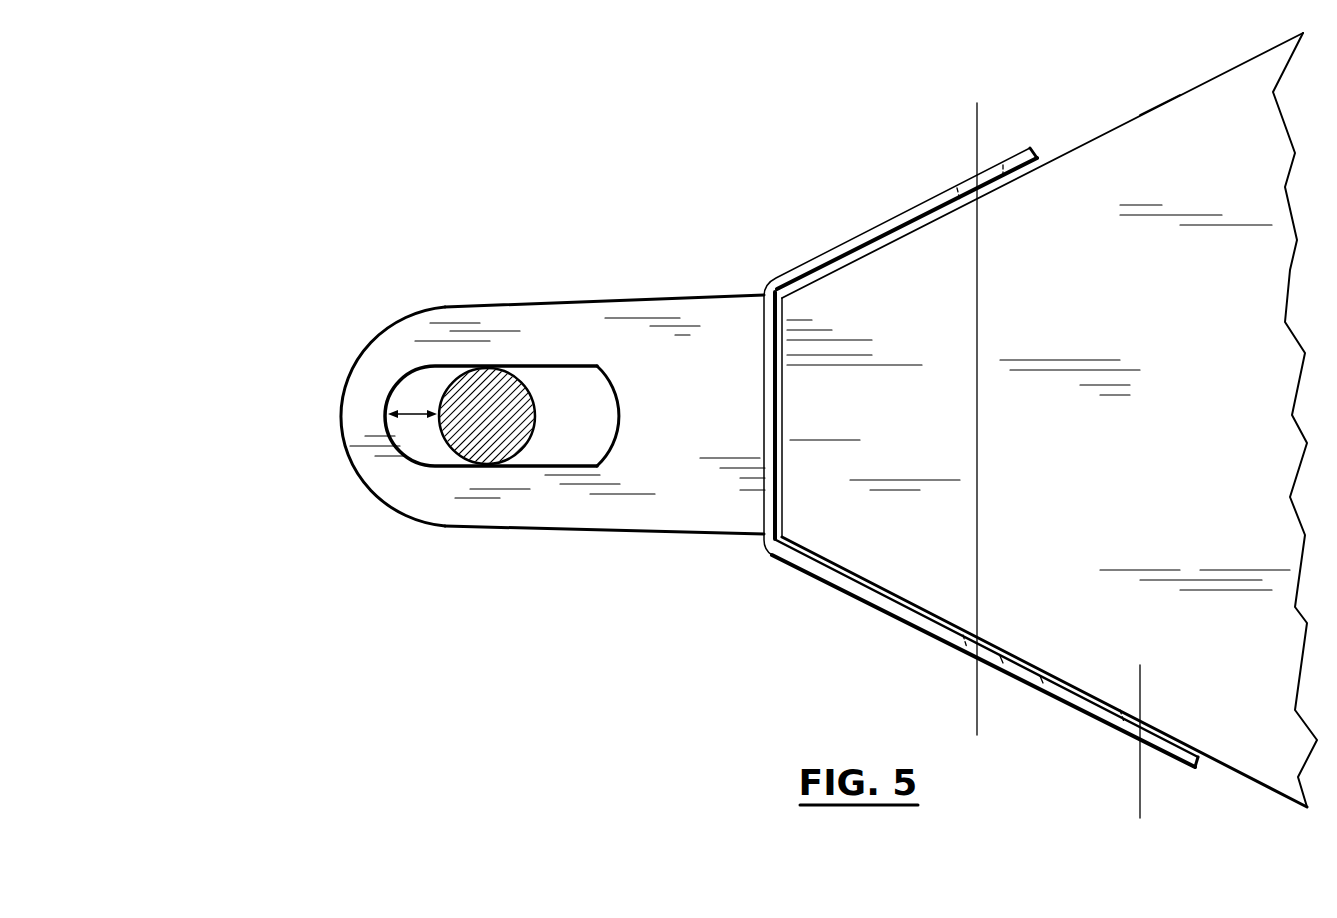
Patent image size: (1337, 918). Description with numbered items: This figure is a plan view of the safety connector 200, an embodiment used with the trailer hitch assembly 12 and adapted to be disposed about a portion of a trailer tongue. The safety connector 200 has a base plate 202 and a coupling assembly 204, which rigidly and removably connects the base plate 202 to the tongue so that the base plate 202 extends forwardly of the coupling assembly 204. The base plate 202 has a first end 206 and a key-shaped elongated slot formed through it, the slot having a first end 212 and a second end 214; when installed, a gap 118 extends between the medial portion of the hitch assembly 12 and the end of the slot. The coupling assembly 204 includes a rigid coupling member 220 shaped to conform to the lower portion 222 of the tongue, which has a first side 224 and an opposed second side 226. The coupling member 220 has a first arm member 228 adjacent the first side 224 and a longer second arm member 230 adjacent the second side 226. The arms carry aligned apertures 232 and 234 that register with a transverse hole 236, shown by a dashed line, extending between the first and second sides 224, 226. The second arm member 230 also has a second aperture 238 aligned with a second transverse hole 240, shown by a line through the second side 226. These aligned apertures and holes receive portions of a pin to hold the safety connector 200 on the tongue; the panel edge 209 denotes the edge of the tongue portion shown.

The trailer hitch assembly 12 is at (441, 445).
The gap 118 is at (412, 412).
The safety connector 200 is at (708, 539).
The base plate 202 is at (549, 537).
The coupling assembly 204 is at (817, 581).
The first end 206 is at (329, 415).
The panel edge 209 is at (1154, 100).
The first end of elongated slot 212 is at (699, 381).
The second end of elongated slot 214 is at (386, 407).
The coupling member 220 is at (866, 607).
The lower portion of tongue 222 is at (1210, 126).
The first side 224 is at (1098, 133).
The second side 226 is at (1248, 777).
The first arm member 228 is at (862, 232).
The second arm member 230 is at (1045, 692).
The aperture 232 is at (954, 194).
The aperture 234 is at (962, 644).
The transverse hole 236 is at (985, 300).
The second aperture 238 is at (1118, 723).
The second transverse hole 240 is at (1145, 692).